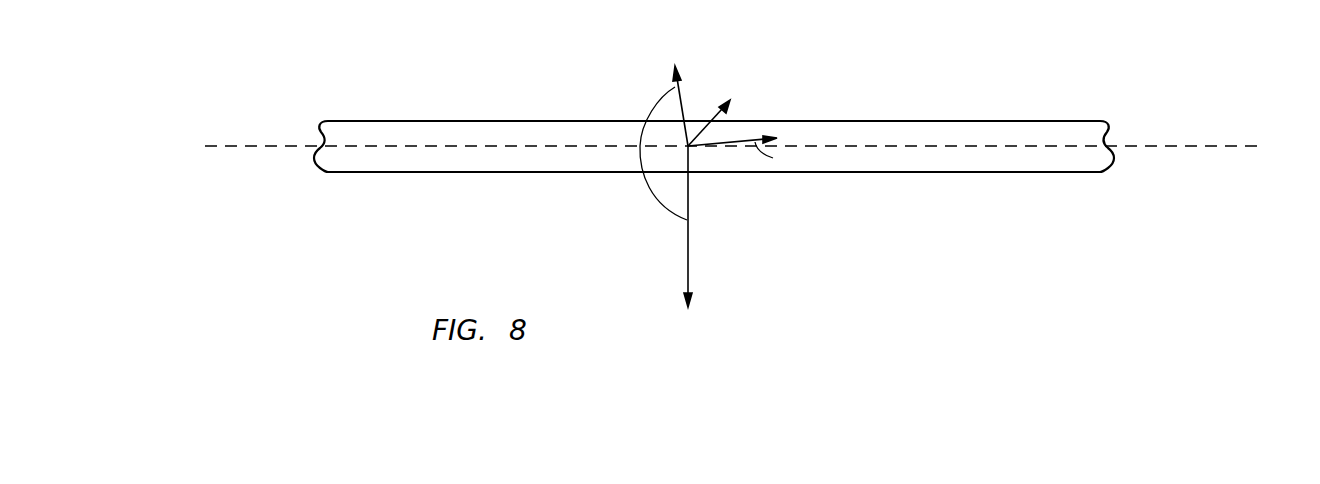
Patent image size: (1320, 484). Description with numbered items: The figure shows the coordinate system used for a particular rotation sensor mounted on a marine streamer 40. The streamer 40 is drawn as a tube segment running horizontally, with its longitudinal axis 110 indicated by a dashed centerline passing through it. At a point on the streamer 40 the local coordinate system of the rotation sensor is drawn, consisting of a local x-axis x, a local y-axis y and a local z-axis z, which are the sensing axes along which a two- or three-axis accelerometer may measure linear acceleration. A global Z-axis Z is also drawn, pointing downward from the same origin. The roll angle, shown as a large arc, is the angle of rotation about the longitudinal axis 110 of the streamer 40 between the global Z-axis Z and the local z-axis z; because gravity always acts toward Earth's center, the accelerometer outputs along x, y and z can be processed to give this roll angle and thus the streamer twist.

The streamer 40 is at (1030, 121).
The longitudinal axis 110 is at (1191, 146).
The local x-axis x is at (740, 135).
The local y-axis y is at (715, 114).
The local z-axis z is at (680, 94).
The global Z-axis Z is at (686, 244).